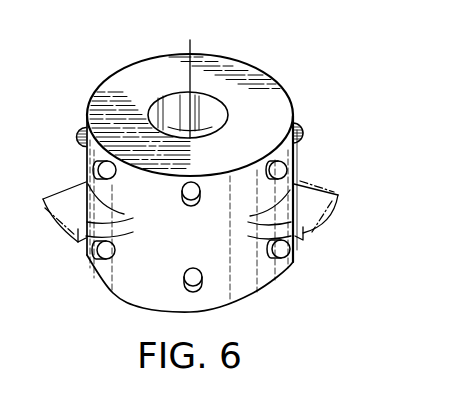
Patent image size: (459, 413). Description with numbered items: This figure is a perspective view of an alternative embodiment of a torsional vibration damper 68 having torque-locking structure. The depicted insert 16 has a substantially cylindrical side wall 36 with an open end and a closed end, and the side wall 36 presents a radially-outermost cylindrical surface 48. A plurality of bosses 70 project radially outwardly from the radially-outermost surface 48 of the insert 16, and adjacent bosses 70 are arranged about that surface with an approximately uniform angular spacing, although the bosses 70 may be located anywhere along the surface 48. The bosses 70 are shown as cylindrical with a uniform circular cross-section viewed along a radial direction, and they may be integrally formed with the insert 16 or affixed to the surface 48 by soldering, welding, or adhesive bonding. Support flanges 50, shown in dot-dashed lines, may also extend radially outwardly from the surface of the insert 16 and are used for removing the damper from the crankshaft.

The insert 16 is at (120, 69).
The side wall 36 is at (283, 277).
The radially-outermost cylindrical surface 48 is at (250, 287).
The support flanges 50 is at (63, 191).
The torsional vibration damper 68 is at (304, 98).
The bosses 70 is at (78, 137).